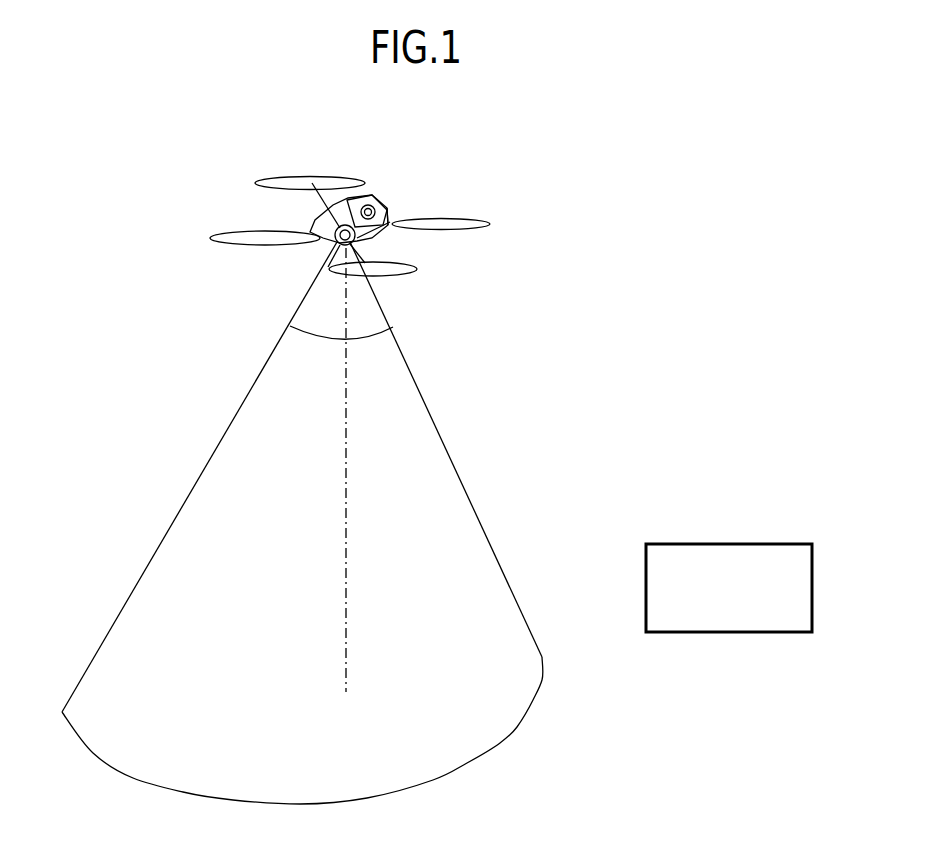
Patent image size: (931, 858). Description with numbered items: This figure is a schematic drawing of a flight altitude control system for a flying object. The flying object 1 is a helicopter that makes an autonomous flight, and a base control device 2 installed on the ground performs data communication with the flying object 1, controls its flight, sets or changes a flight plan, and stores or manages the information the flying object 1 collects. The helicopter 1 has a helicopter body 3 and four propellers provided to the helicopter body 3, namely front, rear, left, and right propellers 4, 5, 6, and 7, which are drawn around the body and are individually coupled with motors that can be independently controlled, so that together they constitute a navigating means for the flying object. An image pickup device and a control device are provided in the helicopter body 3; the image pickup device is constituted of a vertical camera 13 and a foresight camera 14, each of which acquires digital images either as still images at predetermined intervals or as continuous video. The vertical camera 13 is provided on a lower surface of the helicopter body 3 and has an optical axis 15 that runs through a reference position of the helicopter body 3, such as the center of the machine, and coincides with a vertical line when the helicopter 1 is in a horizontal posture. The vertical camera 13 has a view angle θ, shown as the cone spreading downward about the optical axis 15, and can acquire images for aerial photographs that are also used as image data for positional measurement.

The flying object 1 is at (372, 196).
The base control device 2 is at (734, 543).
The helicopter body 3 is at (386, 213).
The front propeller 4 is at (262, 179).
The rear propeller 5 is at (490, 220).
The left propeller 6 is at (218, 240).
The right propeller 7 is at (409, 276).
The vertical camera 13 is at (334, 245).
The foresight camera 14 is at (373, 200).
The optical axis 15 is at (347, 496).